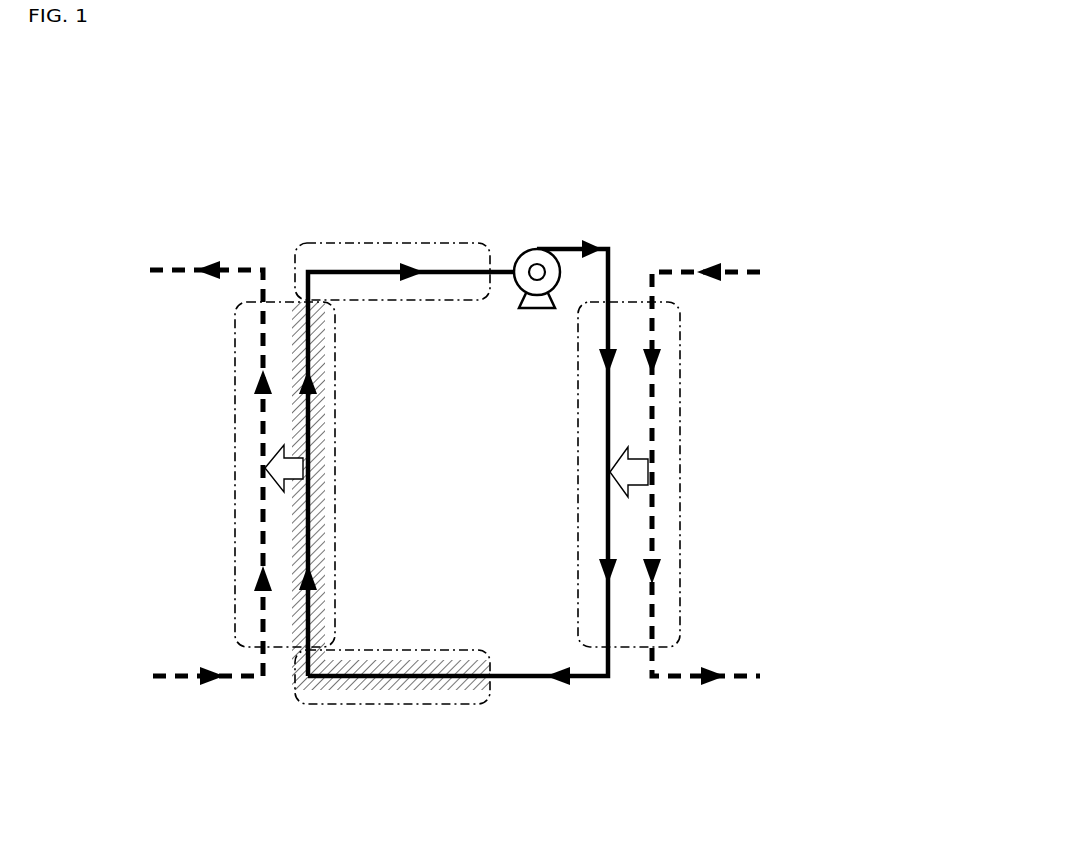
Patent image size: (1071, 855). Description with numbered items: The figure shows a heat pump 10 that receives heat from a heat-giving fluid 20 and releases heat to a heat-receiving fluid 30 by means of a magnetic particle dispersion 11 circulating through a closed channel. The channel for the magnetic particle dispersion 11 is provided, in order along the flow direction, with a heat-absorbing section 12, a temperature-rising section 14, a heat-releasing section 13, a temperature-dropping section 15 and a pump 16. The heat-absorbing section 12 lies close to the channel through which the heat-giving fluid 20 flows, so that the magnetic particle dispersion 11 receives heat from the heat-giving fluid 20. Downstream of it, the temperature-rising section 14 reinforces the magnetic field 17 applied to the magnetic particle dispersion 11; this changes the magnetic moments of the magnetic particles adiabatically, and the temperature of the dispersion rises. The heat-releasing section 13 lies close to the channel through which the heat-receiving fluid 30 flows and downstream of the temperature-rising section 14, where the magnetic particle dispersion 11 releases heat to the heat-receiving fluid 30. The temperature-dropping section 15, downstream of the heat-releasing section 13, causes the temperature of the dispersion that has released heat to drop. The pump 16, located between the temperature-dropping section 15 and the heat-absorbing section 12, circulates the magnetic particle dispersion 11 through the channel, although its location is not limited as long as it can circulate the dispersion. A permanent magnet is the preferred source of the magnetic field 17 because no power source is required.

The heat pump 10 is at (550, 150).
The magnetic particle dispersion 11 is at (577, 681).
The heat-absorbing section 12 is at (670, 575).
The heat-releasing section 13 is at (243, 513).
The temperature-rising section 14 is at (310, 704).
The temperature-dropping section 15 is at (318, 250).
The pump 16 is at (538, 262).
The magnetic field 17 is at (462, 692).
The heat-giving fluid 20 is at (682, 270).
The heat-receiving fluid 30 is at (155, 268).